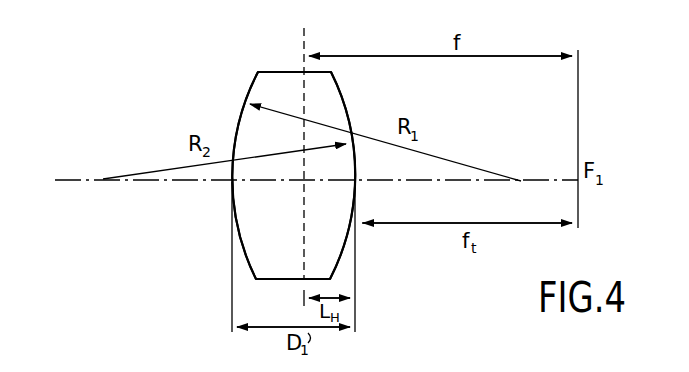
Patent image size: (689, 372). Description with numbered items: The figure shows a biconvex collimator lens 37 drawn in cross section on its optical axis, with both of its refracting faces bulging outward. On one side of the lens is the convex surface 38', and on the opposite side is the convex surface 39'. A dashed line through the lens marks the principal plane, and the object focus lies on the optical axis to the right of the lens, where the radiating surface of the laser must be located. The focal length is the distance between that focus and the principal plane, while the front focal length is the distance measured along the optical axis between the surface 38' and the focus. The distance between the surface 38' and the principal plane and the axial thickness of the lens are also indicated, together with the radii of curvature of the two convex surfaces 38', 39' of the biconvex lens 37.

The lens 37 is at (279, 65).
The second lens surface 38' is at (368, 175).
The first lens surface 39' is at (221, 175).